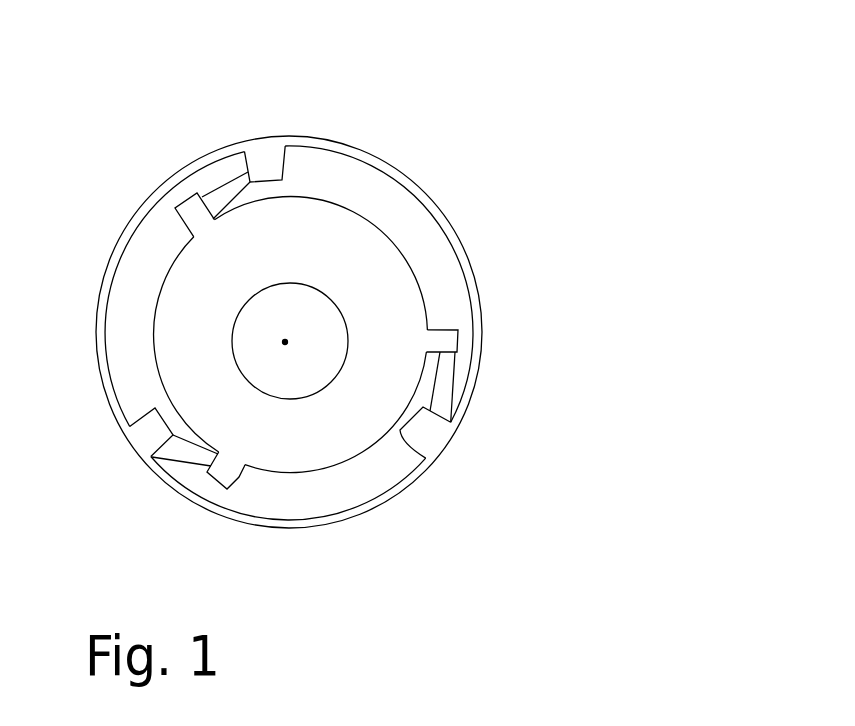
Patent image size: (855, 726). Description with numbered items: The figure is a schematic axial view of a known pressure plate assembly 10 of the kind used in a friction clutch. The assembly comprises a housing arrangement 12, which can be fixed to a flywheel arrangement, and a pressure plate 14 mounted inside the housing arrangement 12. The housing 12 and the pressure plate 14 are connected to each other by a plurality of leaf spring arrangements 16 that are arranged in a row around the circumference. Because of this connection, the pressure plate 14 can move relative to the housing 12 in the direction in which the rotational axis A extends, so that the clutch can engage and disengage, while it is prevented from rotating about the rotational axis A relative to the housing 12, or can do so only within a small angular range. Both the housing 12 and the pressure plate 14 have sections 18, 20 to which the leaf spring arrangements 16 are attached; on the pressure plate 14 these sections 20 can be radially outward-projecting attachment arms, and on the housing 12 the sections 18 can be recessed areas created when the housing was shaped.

The pressure plate assembly 10 is at (450, 135).
The housing arrangement 12 is at (466, 240).
The pressure plate 14 is at (316, 215).
The leaf spring arrangements 16 is at (208, 165).
The sections of the housing 18 is at (257, 156).
The sections of the pressure plate 20 is at (183, 218).
The rotational axis A is at (285, 342).